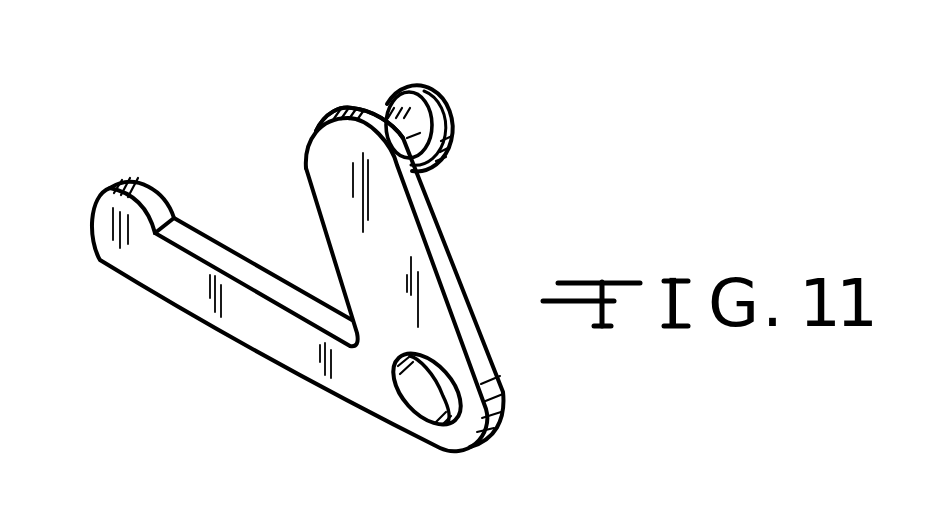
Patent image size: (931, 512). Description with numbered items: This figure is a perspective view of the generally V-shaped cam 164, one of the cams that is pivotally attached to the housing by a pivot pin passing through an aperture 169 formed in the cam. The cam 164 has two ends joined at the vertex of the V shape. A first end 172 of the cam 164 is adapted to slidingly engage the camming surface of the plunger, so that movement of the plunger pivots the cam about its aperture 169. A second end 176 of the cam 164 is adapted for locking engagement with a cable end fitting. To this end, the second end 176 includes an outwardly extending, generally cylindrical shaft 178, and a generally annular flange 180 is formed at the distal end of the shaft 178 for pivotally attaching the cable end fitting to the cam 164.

The cam 164 is at (300, 157).
The aperture 169 is at (413, 397).
The first end 172 is at (110, 228).
The second end 176 is at (337, 147).
The cylindrical shaft 178 is at (387, 111).
The annular flange 180 is at (453, 140).